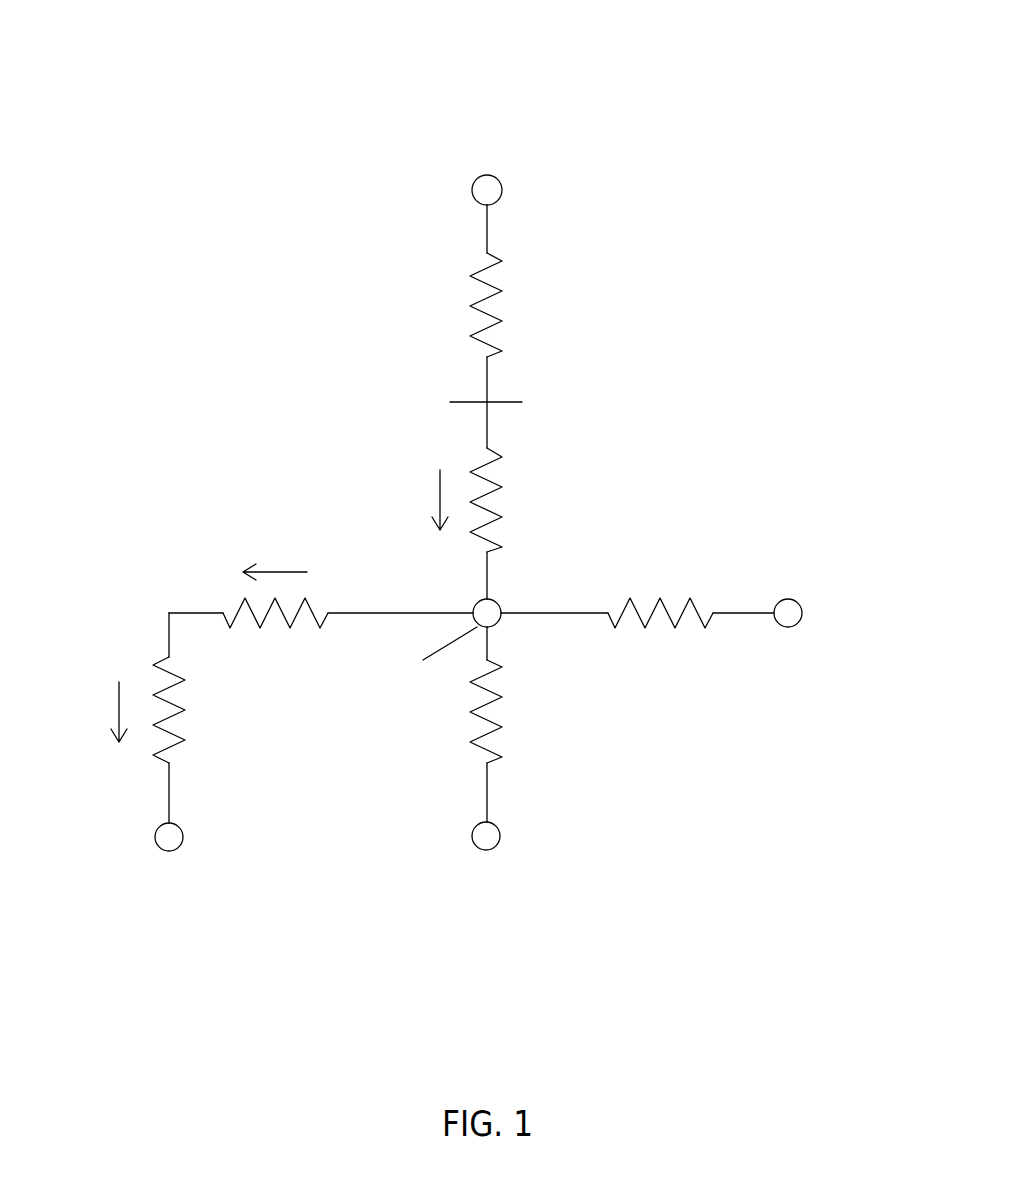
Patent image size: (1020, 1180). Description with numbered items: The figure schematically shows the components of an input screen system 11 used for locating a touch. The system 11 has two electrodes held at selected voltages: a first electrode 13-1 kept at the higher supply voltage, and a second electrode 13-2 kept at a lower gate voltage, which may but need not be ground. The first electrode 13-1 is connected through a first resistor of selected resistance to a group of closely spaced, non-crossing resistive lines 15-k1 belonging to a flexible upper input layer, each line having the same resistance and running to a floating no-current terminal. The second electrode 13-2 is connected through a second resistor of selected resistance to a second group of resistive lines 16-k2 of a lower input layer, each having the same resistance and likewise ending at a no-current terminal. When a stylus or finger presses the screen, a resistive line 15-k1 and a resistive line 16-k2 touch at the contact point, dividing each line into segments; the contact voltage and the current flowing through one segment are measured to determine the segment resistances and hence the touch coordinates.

The input screen system 11 is at (785, 95).
The first electrode 13-1 is at (474, 182).
The second electrode 13-2 is at (155, 837).
The resistive lines of first input layer 15-k1 is at (502, 457).
The resistive lines of second input layer 16-k2 is at (245, 598).